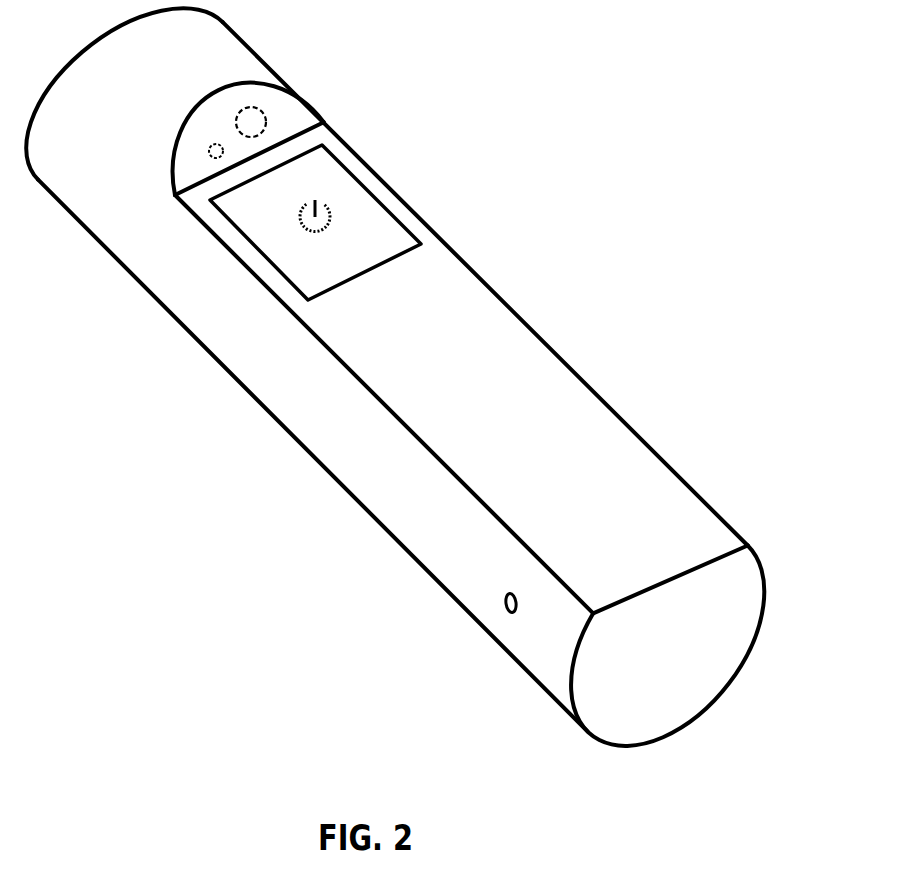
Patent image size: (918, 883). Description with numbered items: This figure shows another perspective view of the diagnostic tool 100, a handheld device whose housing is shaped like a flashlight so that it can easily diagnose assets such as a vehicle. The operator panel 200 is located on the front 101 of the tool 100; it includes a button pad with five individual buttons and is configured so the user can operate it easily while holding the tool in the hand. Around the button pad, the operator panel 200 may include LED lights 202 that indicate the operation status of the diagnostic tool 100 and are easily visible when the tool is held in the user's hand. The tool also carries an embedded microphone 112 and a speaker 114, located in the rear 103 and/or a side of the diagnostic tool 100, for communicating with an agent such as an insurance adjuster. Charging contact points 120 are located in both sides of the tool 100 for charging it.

The diagnostic tool 100 is at (578, 252).
The front 101 is at (587, 423).
The rear 103 is at (362, 504).
The microphone 112 is at (215, 158).
The speaker 114 is at (251, 118).
The charging contact points 120 is at (503, 603).
The operator panel 200 is at (366, 238).
The LED lights 202 is at (343, 160).